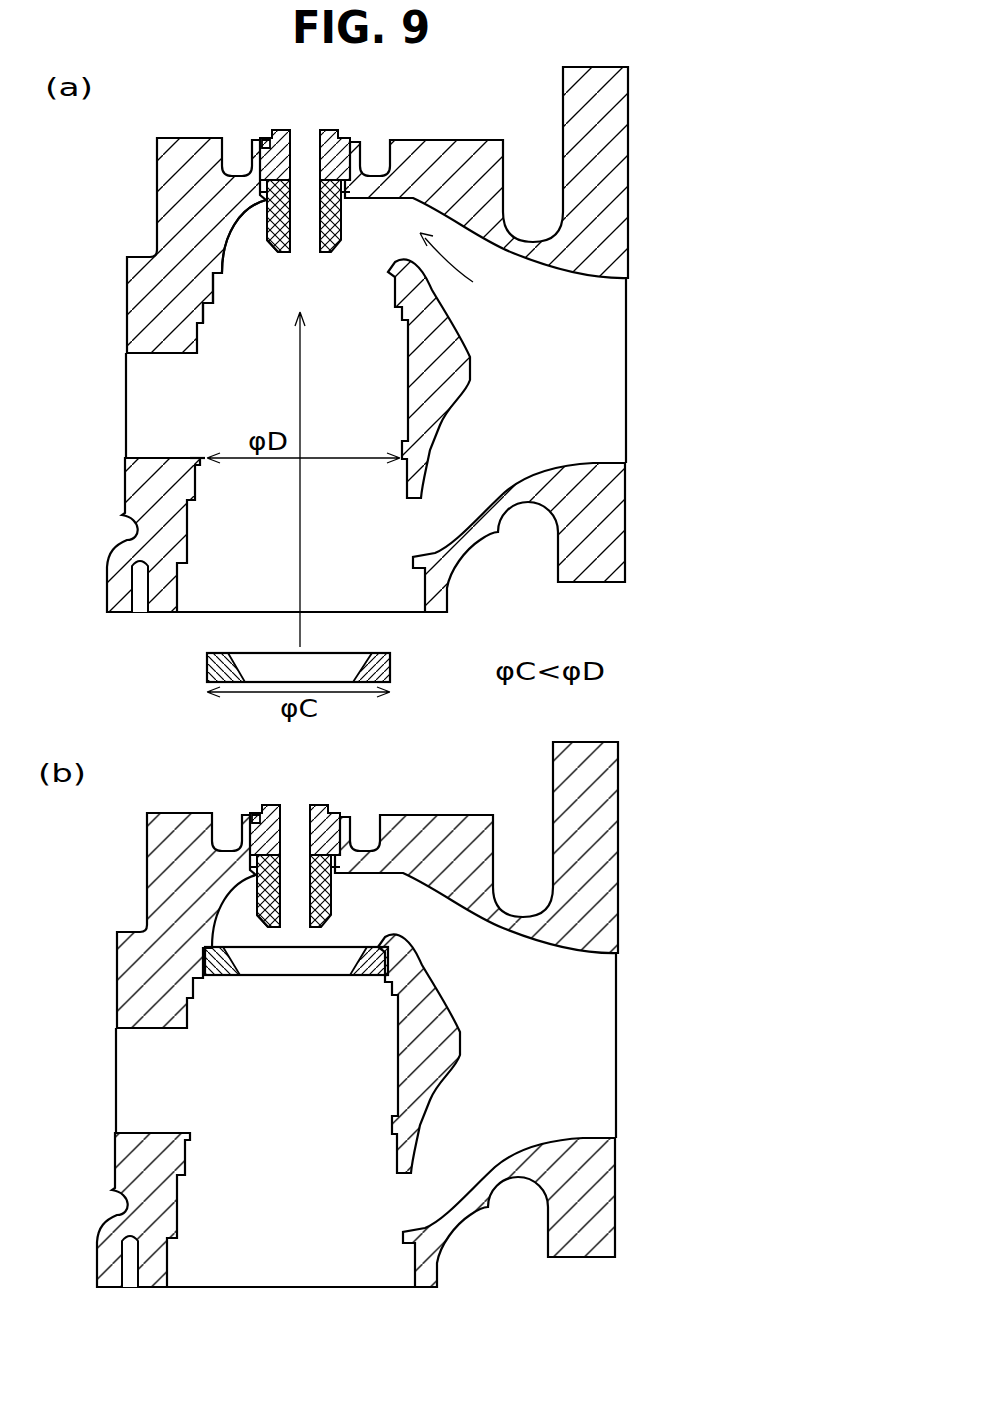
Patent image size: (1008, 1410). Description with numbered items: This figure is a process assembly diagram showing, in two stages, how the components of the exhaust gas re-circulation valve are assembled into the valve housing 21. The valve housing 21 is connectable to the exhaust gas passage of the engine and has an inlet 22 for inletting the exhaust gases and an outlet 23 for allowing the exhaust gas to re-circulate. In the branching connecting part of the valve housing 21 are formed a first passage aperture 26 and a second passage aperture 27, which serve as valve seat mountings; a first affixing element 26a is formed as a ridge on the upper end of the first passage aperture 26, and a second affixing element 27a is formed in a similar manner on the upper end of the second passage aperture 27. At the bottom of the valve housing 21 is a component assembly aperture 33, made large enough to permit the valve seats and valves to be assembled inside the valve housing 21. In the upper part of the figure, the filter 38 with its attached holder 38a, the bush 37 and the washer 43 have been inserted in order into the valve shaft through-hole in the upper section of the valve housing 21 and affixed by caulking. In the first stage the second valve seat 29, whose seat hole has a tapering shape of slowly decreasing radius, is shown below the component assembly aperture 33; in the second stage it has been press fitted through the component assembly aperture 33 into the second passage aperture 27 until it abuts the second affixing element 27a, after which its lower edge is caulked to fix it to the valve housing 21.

The valve housing 21 is at (628, 150).
The inlet 22 is at (160, 378).
The outlet 23 is at (585, 372).
The first passage aperture 26 is at (200, 478).
The first affixing element 26a is at (207, 455).
The second passage aperture 27 is at (213, 295).
The second affixing element 27a is at (221, 262).
The second valve seat 29 is at (392, 657).
The component assembly aperture 33 is at (218, 598).
The bush 37 is at (328, 137).
The filter 38 is at (341, 200).
The holder 38a is at (267, 243).
The washer 43 is at (263, 137).